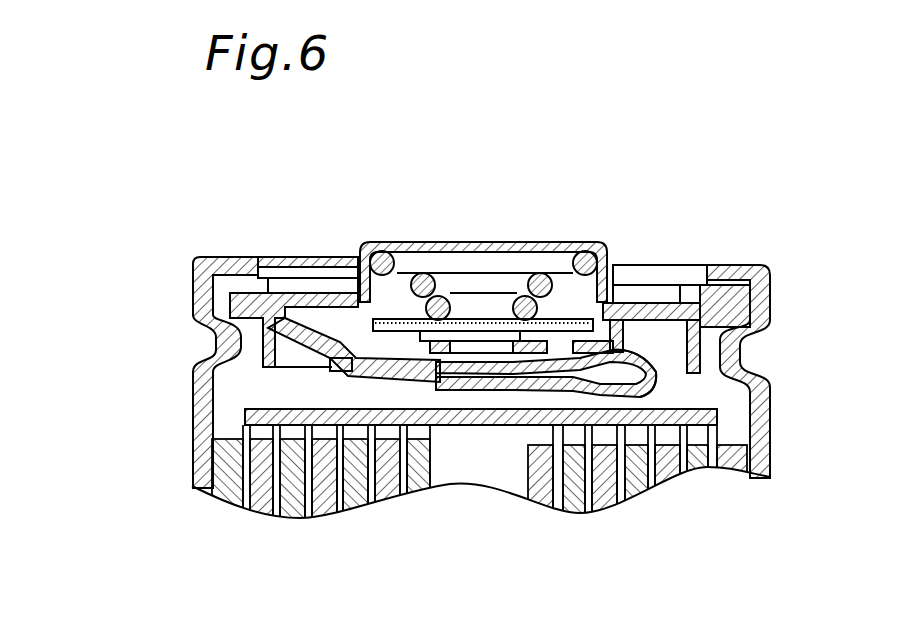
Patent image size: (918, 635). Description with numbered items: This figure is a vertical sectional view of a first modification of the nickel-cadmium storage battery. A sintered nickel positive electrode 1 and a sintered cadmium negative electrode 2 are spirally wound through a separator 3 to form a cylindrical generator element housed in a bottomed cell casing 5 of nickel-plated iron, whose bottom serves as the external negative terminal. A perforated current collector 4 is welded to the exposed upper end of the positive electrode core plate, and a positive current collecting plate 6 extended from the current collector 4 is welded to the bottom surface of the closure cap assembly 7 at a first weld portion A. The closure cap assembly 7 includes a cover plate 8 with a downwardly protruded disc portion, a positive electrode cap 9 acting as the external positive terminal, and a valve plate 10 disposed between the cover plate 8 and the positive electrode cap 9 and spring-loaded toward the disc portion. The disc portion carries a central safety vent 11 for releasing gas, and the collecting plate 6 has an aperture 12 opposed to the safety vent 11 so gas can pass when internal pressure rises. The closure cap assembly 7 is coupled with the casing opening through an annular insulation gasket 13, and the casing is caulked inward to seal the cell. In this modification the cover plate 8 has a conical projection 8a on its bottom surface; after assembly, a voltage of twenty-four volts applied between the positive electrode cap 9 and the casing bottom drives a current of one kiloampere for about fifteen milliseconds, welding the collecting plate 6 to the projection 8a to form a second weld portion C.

The sintered nickel positive electrode 1 is at (384, 504).
The sintered cadmium negative electrode 2 is at (420, 488).
The separator 3 is at (304, 494).
The perforated current collector 4 is at (478, 425).
The cell casing 5 is at (189, 397).
The positive current collecting plate 6 is at (656, 391).
The closure cap assembly 7 is at (625, 73).
The cover plate 8 is at (621, 318).
The conical projection 8a is at (623, 362).
The positive electrode cap 9 is at (510, 240).
The valve plate 10 is at (477, 320).
The safety vent 11 is at (367, 237).
The aperture 12 is at (350, 366).
The annular insulation gasket 13 is at (727, 292).
The first weld portion A is at (189, 481).
The second weld portion C is at (570, 378).